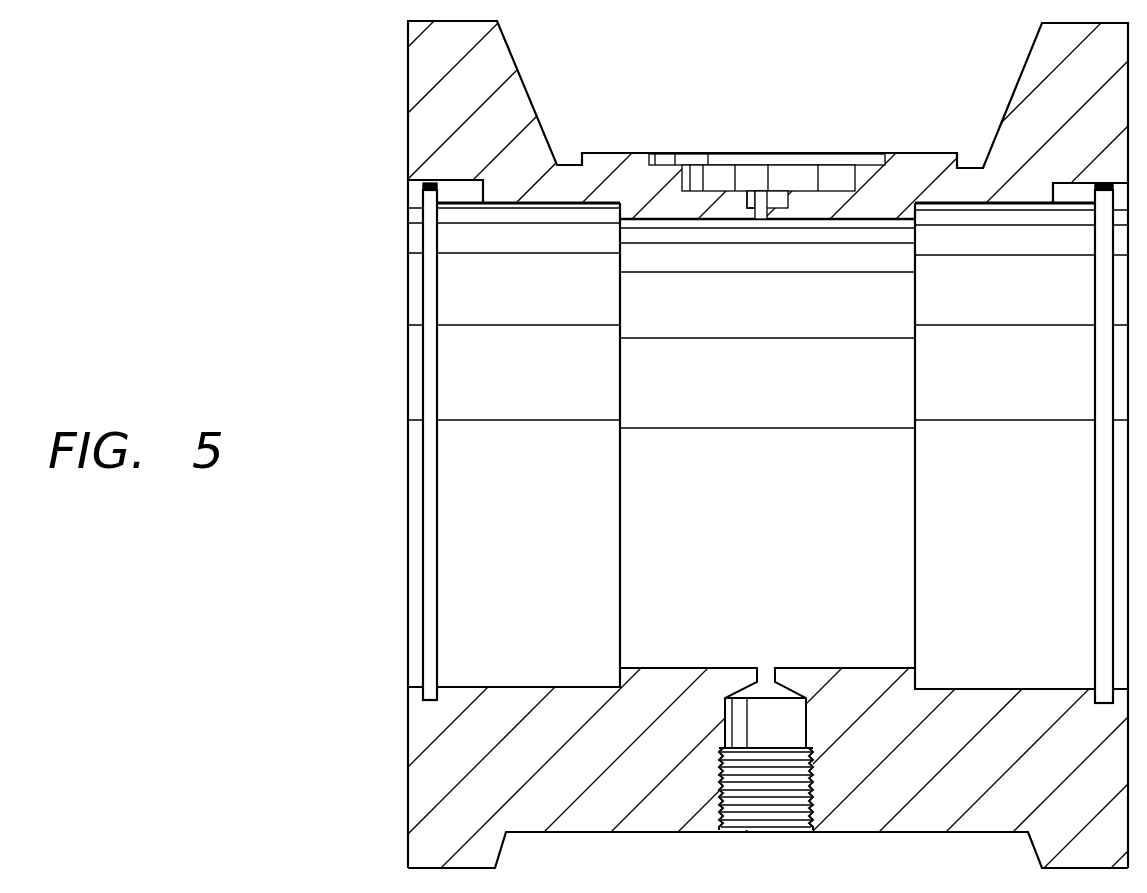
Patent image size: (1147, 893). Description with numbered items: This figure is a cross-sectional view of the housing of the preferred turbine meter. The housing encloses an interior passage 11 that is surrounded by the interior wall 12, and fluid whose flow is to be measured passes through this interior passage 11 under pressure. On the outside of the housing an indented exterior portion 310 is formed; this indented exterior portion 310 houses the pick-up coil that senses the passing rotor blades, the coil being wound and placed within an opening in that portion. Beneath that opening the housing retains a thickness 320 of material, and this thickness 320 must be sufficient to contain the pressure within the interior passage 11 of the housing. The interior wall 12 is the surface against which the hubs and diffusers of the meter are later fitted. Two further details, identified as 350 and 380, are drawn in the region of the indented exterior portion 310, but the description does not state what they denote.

The interior passage 11 is at (764, 507).
The interior wall 12 is at (1041, 688).
The indented exterior portion 310 is at (820, 167).
The thickness 320 is at (766, 216).
The seal element 350 is at (752, 207).
The pressure sensing element 380 is at (767, 192).